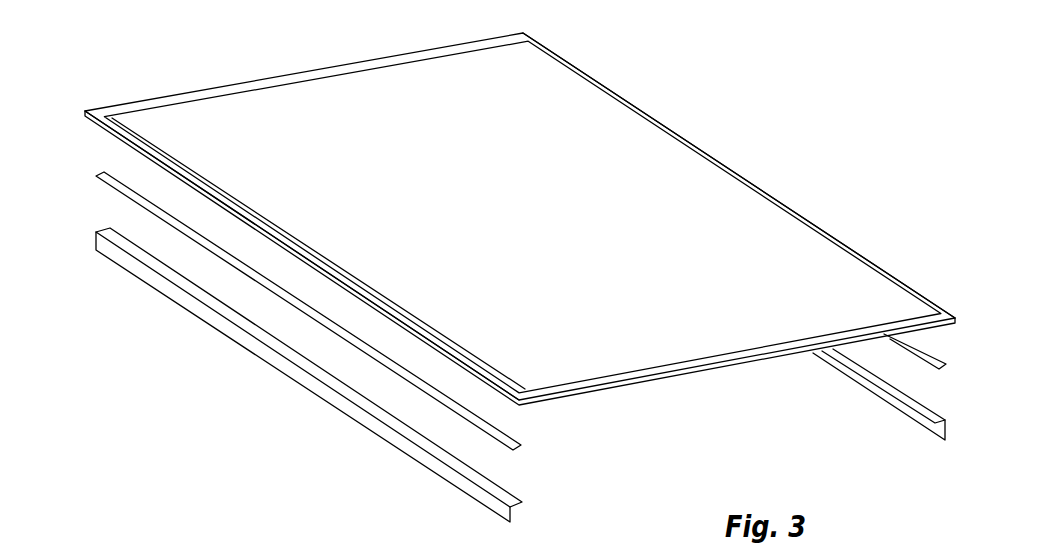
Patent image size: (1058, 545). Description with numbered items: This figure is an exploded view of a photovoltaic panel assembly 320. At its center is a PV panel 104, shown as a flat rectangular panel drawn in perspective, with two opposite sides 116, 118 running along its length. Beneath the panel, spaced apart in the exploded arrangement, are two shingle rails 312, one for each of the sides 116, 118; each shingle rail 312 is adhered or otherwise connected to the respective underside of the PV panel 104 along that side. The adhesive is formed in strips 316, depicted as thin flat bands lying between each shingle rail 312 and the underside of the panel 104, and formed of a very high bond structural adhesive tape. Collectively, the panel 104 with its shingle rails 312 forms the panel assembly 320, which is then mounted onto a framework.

The PV panel 104 is at (535, 208).
The side 116 is at (749, 183).
The side 118 is at (112, 137).
The shingle rail 312 is at (292, 378).
The adhesive strip 316 is at (500, 432).
The panel assembly 320 is at (767, 87).